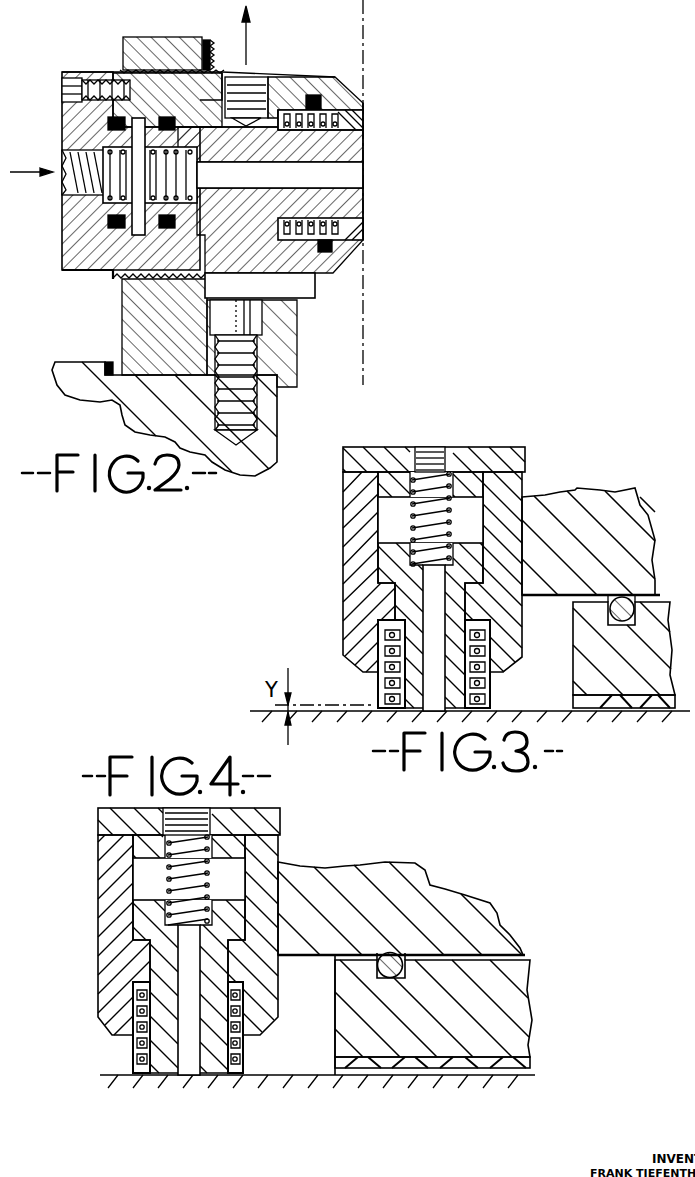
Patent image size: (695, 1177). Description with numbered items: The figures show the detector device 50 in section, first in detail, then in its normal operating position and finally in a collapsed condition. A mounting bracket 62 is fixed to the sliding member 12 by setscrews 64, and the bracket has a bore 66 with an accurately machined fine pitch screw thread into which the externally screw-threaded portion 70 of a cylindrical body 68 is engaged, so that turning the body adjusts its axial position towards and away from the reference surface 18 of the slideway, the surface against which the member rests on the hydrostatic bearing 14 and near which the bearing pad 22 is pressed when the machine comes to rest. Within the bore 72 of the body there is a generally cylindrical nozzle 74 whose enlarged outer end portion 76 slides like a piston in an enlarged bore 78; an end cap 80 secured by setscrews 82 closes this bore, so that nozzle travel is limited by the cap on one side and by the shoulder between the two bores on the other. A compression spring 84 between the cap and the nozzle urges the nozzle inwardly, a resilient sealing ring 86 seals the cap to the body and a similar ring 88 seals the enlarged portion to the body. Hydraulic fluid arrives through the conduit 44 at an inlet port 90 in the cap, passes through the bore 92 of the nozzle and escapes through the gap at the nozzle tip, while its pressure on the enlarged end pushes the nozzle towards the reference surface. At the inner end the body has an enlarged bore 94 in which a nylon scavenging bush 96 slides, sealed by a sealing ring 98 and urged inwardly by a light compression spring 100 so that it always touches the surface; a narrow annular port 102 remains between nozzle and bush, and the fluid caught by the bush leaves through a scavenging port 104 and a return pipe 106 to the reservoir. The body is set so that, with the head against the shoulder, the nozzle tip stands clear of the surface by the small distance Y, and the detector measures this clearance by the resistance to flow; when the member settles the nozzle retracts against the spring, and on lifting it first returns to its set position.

In FIG. 3, the sliding member 12 is at (600, 493).
In FIG. 4, the sliding member 12 is at (430, 898).
In FIG. 2, the hydrostatic bearing 14 is at (268, 425).
In FIG. 3, the surface of the slideway 18 is at (524, 710).
In FIG. 4, the surface of the slideway 18 is at (308, 1075).
In FIG. 3, the bearing pad 22 is at (582, 643).
In FIG. 4, the bearing pad 22 is at (350, 1003).
In FIG. 2, the conduit 44 is at (13, 175).
In FIG. 3, the detector device 50 is at (340, 511).
In FIG. 2, the mounting bracket 62 is at (172, 50).
In FIG. 2, the setscrews 64 is at (268, 356).
In FIG. 2, the bore 66 is at (146, 68).
In FIG. 2, the cylindrical body 68 is at (300, 92).
In FIG. 4, the cylindrical body 68 is at (115, 986).
In FIG. 2, the externally screw-threaded portion 70 is at (209, 60).
In FIG. 2, the bore of the body 72 is at (296, 278).
In FIG. 2, the nozzle 74 is at (352, 117).
In FIG. 3, the nozzle 74 is at (405, 603).
In FIG. 4, the nozzle 74 is at (160, 960).
In FIG. 2, the enlarged outer end portion 76 is at (136, 232).
In FIG. 2, the enlarged bore 78 is at (270, 200).
In FIG. 2, the end cap 80 is at (85, 125).
In FIG. 2, the setscrews 82 is at (108, 105).
In FIG. 2, the compression spring 84 is at (110, 200).
In FIG. 3, the compression spring 84 is at (408, 518).
In FIG. 4, the compression spring 84 is at (165, 856).
In FIG. 2, the resilient sealing ring 86 is at (83, 272).
In FIG. 2, the sealing ring 88 is at (167, 228).
In FIG. 2, the inlet port 90 is at (75, 166).
In FIG. 2, the bore of the nozzle 92 is at (345, 180).
In FIG. 2, the enlarged bore 94 is at (340, 256).
In FIG. 2, the nylon scavenging bush 96 is at (365, 117).
In FIG. 4, the nylon scavenging bush 96 is at (236, 1071).
In FIG. 2, the sealing ring 98 is at (320, 98).
In FIG. 2, the light compression spring 100 is at (360, 240).
In FIG. 2, the narrow annular port 102 is at (352, 131).
In FIG. 2, the scavenging port 104 is at (250, 88).
In FIG. 2, the return pipe 106 is at (250, 32).